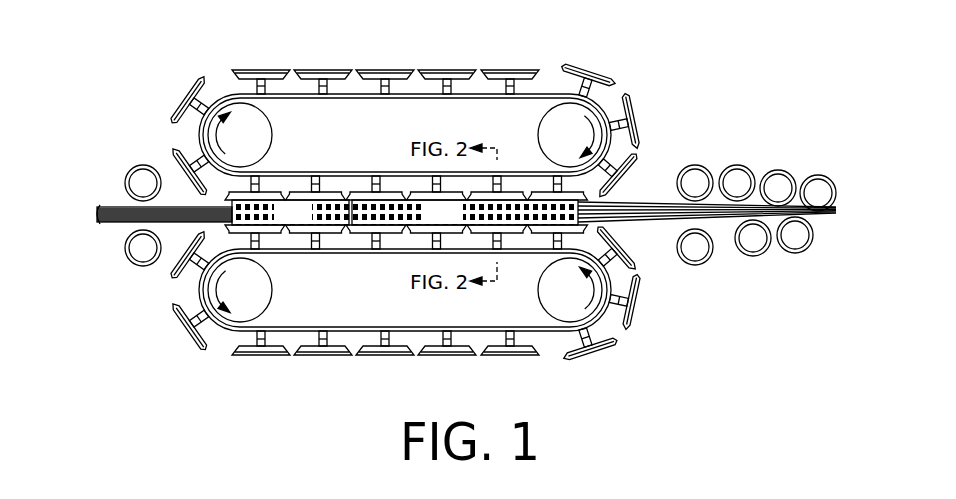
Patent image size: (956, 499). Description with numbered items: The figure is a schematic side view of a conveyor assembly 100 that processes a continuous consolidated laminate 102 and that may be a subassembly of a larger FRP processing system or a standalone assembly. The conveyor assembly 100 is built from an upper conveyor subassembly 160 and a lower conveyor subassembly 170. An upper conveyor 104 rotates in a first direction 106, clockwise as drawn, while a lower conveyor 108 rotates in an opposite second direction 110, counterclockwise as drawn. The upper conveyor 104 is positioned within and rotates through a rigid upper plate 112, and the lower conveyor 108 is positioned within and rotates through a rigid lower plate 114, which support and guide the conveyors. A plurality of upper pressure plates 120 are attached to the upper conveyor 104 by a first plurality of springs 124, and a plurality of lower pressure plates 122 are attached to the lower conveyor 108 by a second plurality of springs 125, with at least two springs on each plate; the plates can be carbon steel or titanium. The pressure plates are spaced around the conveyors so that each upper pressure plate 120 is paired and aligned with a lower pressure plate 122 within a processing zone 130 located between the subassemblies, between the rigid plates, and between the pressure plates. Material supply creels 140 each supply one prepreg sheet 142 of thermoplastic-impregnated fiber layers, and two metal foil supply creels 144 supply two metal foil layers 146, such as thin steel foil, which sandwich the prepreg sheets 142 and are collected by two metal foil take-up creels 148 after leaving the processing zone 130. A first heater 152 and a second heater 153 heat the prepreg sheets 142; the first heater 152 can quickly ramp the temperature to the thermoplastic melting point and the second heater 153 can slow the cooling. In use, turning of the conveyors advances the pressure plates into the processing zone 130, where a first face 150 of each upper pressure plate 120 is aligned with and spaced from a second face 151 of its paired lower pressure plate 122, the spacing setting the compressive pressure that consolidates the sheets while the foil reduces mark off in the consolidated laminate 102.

The conveyor assembly 100 is at (122, 45).
The continuous consolidated laminate 102 is at (109, 239).
The upper conveyor 104 is at (472, 100).
The first direction 106 is at (213, 137).
The lower conveyor 108 is at (532, 325).
The second direction 110 is at (213, 288).
The rigid upper plate 112 is at (353, 170).
The rigid lower plate 114 is at (345, 255).
The upper pressure plates 120 is at (323, 68).
The lower pressure plates 122 is at (448, 360).
The first plurality of springs 124 is at (248, 82).
The second plurality of springs 125 is at (253, 342).
The processing zone 130 is at (645, 203).
The material supply creels 140 is at (780, 185).
The prepreg sheets 142 is at (724, 218).
The metal foil supply creels 144 is at (697, 178).
The metal foil layers 146 is at (643, 205).
The metal foil take-up creels 148 is at (135, 175).
The first face 150 is at (449, 62).
The second face 151 is at (320, 366).
The first heater 152 is at (460, 224).
The second heater 153 is at (309, 224).
The upper conveyor subassembly 160 is at (714, 84).
The lower conveyor subassembly 170 is at (688, 336).